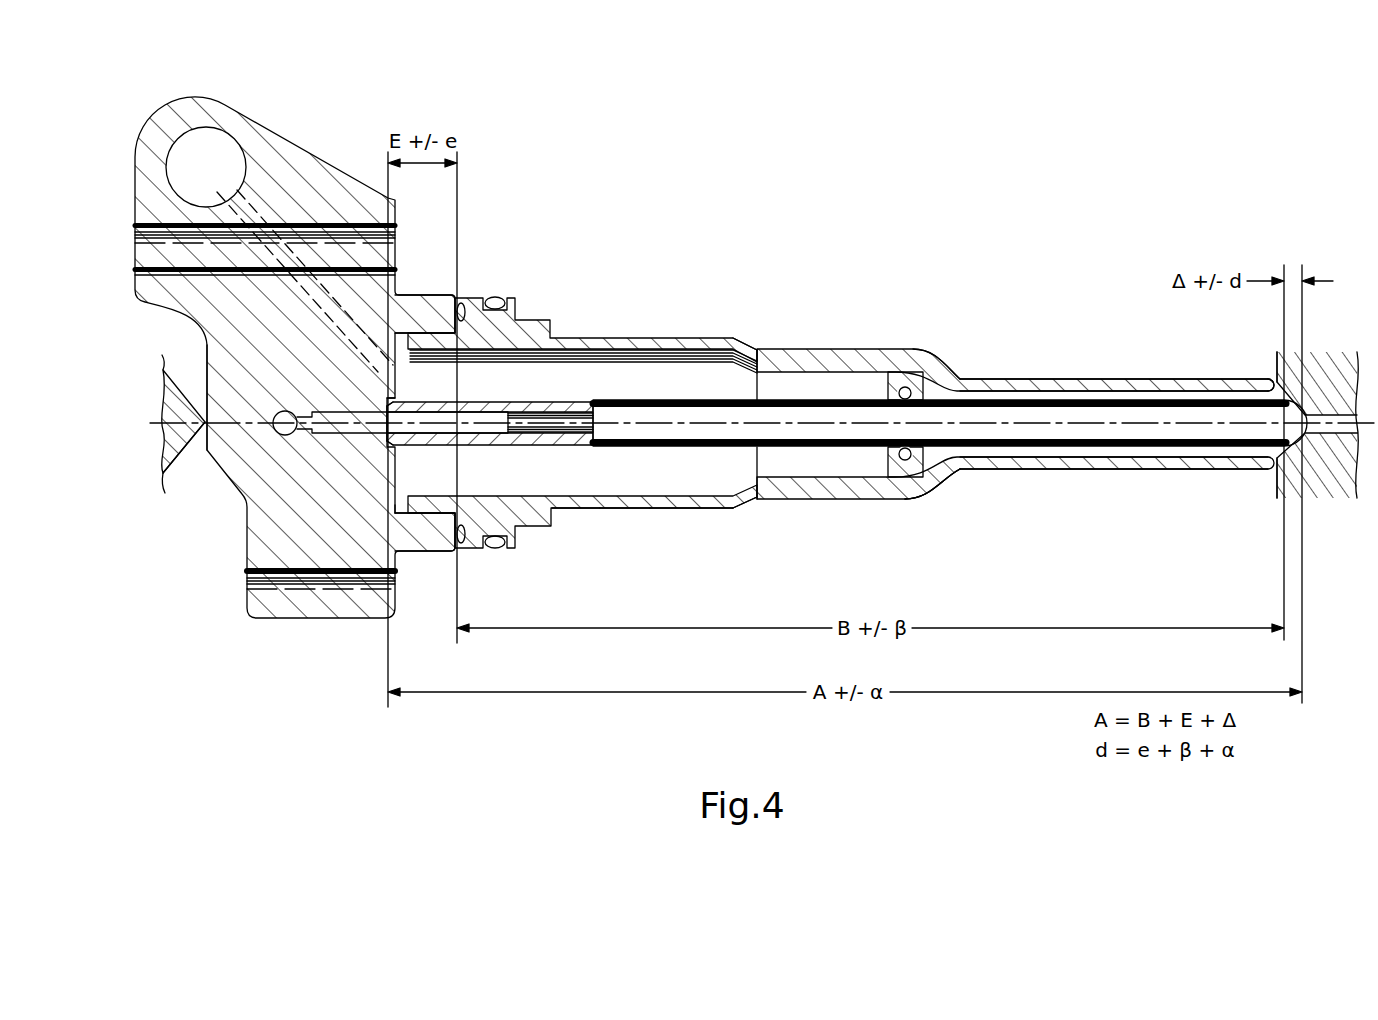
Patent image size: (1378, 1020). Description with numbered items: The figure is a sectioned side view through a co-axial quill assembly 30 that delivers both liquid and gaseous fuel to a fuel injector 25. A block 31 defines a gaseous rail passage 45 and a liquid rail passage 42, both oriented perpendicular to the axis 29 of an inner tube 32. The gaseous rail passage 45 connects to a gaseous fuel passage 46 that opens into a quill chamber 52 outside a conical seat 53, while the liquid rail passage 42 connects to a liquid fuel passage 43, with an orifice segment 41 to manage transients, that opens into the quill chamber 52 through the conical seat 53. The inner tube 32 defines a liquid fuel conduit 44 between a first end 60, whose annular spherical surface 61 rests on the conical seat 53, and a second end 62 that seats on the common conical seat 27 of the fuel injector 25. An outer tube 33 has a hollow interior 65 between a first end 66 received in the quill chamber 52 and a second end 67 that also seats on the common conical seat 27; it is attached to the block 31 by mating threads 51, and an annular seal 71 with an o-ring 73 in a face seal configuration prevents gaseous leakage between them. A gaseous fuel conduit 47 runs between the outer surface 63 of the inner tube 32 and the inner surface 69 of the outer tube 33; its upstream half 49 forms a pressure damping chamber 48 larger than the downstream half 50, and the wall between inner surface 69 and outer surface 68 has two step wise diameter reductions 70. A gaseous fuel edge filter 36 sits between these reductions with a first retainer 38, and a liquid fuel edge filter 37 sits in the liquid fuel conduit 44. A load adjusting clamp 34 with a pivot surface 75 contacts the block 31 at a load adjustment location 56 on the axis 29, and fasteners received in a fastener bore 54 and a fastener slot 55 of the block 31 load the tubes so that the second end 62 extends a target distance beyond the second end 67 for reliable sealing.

The fuel injector 25 is at (1276, 484).
The common conical seat 27 is at (1282, 387).
The axis 29 is at (1192, 420).
The co-axial quill assembly 30 is at (752, 232).
The block 31 is at (304, 143).
The inner tube 32 is at (1108, 414).
The outer tube 33 is at (972, 472).
The load adjusting clamp 34 is at (165, 478).
The gaseous fuel edge filter 36 is at (863, 353).
The liquid fuel edge filter 37 is at (463, 420).
The first retainer 38 is at (915, 384).
The orifice segment 41 is at (296, 433).
The liquid rail passage 42 is at (283, 435).
The liquid fuel passage 43 is at (357, 434).
The liquid fuel conduit 44 is at (530, 432).
The gaseous rail passage 45 is at (203, 127).
The gaseous fuel passage 46 is at (217, 192).
The gaseous fuel conduit 47 is at (647, 474).
The pressure damping chamber 48 is at (692, 474).
The upstream half 49 is at (600, 474).
The downstream half 50 is at (1037, 452).
The mating threads 51 is at (412, 330).
The quill chamber 52 is at (428, 540).
The conical seat 53 is at (393, 447).
The fastener bore 54 is at (178, 267).
The fastener slot 55 is at (284, 600).
The load adjustment location 56 is at (202, 436).
The first end 60 is at (378, 412).
The annular spherical surface 61 is at (388, 394).
The second end 62 is at (1320, 404).
The outer surface 63 is at (1145, 433).
The hollow interior 65 is at (537, 480).
The first end 66 is at (394, 506).
The second end 67 is at (1286, 391).
The outer surface 68 is at (580, 337).
The inner surface 69 is at (703, 351).
The step wise diameter reductions 70 is at (762, 334).
The annular seal 71 is at (462, 308).
The o-ring 73 is at (458, 545).
The pivot surface 75 is at (208, 410).